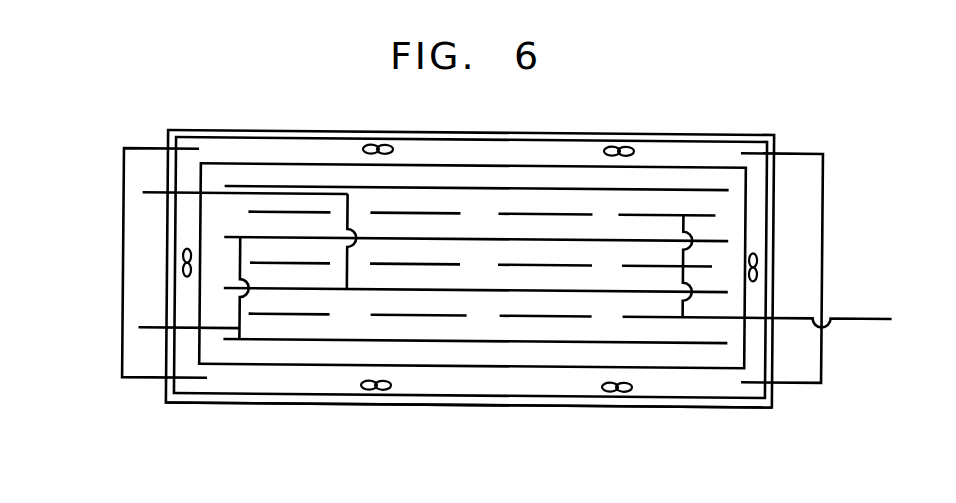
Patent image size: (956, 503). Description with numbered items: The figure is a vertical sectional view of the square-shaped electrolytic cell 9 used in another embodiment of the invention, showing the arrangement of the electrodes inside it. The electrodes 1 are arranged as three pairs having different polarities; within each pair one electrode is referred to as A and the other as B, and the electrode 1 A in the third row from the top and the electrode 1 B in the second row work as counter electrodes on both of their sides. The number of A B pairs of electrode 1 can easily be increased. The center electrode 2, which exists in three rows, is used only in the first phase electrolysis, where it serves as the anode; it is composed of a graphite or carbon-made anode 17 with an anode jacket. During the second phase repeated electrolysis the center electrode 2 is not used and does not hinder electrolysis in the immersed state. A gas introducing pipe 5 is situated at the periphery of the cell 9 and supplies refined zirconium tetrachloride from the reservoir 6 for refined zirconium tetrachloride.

The electrode 1 is at (456, 187).
The center electrode 2 is at (860, 325).
The gas introducing pipe 5 is at (306, 152).
The reservoir for refined zirconium tetrachloride 6 is at (123, 265).
The cell 9 is at (669, 137).
The anode 17 is at (610, 407).
The electrode A is at (157, 195).
The electrode B is at (153, 325).